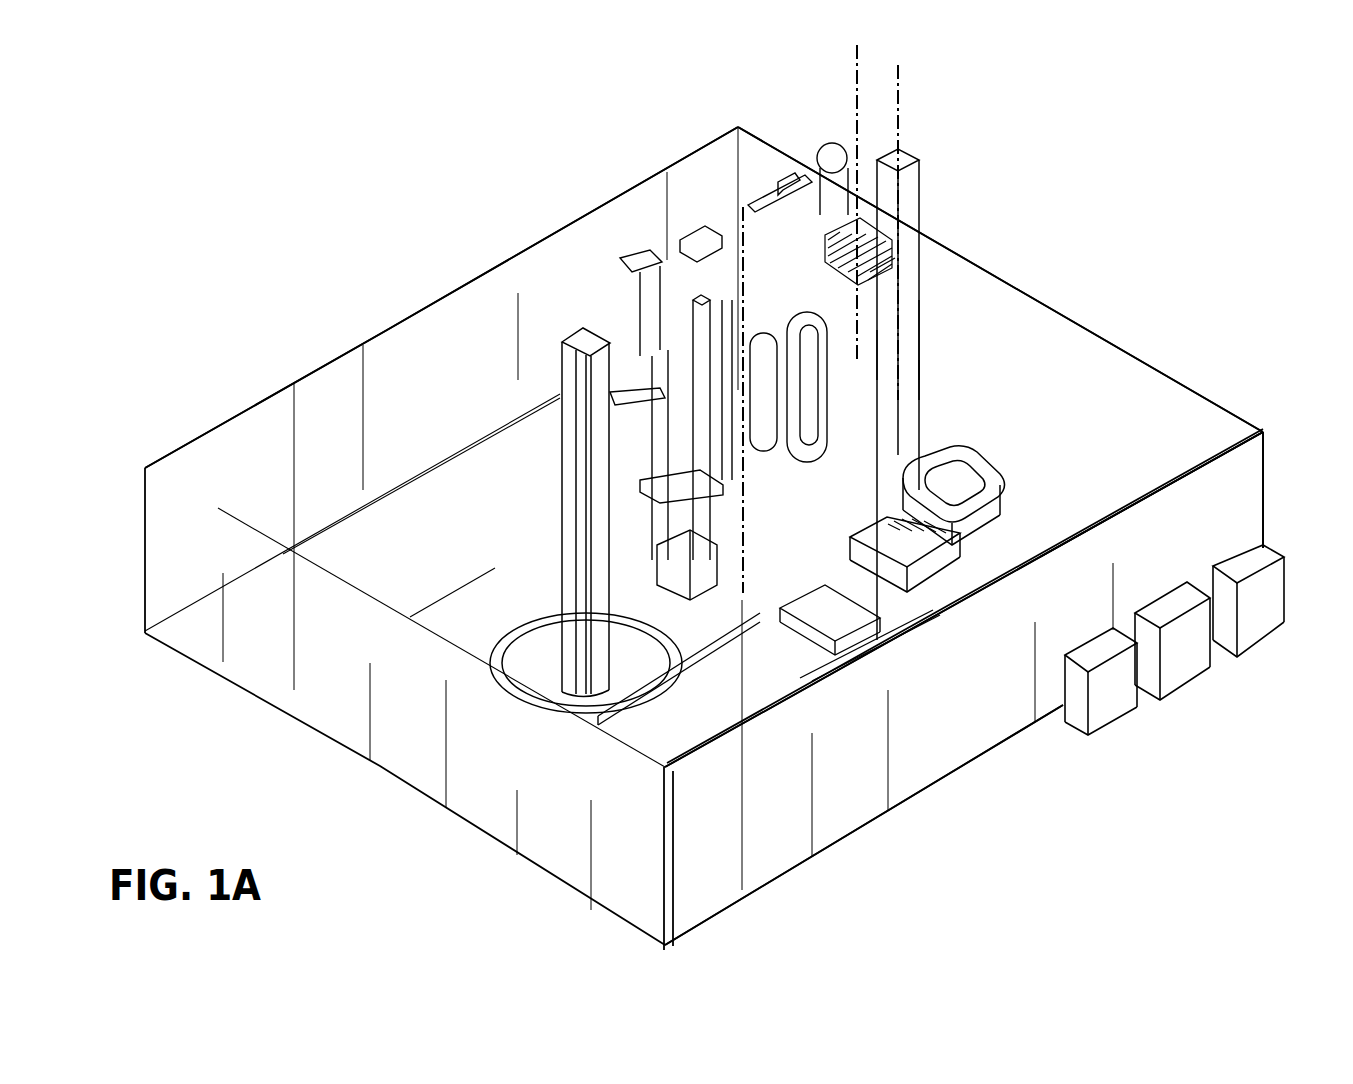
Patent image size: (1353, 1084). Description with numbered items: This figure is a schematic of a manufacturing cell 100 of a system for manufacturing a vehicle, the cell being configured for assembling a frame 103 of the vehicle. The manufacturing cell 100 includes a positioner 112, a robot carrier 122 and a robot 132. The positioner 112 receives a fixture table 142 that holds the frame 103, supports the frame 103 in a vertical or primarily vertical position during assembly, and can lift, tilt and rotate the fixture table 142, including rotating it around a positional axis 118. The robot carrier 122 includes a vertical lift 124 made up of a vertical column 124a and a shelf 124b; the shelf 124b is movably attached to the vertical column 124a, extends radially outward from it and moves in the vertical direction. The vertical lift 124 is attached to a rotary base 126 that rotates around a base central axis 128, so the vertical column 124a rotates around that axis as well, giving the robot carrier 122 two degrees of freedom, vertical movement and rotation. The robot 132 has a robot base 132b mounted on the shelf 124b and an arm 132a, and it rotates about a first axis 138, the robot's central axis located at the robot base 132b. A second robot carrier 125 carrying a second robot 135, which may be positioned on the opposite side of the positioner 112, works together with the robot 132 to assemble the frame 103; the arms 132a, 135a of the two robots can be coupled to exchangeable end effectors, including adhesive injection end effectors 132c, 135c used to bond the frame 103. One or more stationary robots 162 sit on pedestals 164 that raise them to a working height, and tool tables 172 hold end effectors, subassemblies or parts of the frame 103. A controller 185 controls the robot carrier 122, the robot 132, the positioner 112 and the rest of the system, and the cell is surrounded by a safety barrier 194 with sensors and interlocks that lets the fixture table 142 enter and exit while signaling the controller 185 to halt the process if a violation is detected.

The manufacturing cell 100 is at (580, 95).
The frame 103 is at (798, 470).
The positioner 112 is at (697, 538).
The positional axis 118 is at (742, 417).
The robot carrier 122 is at (925, 352).
The vertical lift 124 is at (920, 373).
The vertical column 124a is at (922, 327).
The shelf 124b is at (877, 268).
The second robot carrier 125 is at (575, 567).
The rotary base 126 is at (958, 512).
The base central axis 128 is at (900, 120).
The robot 132 is at (818, 162).
The arm 132a is at (787, 187).
The robot base 132b is at (842, 257).
The adhesive injection end effector 132c is at (753, 200).
The second robot 135 is at (643, 287).
The arm 135a is at (678, 252).
The adhesive injection end effector 135c is at (712, 232).
The first axis 138 is at (853, 103).
The fixture table 142 is at (702, 398).
The stationary robot 162 is at (907, 500).
The pedestal 164 is at (917, 600).
The tool table 172 is at (1013, 550).
The controller 185 is at (1192, 662).
The safety barrier 194 is at (958, 752).